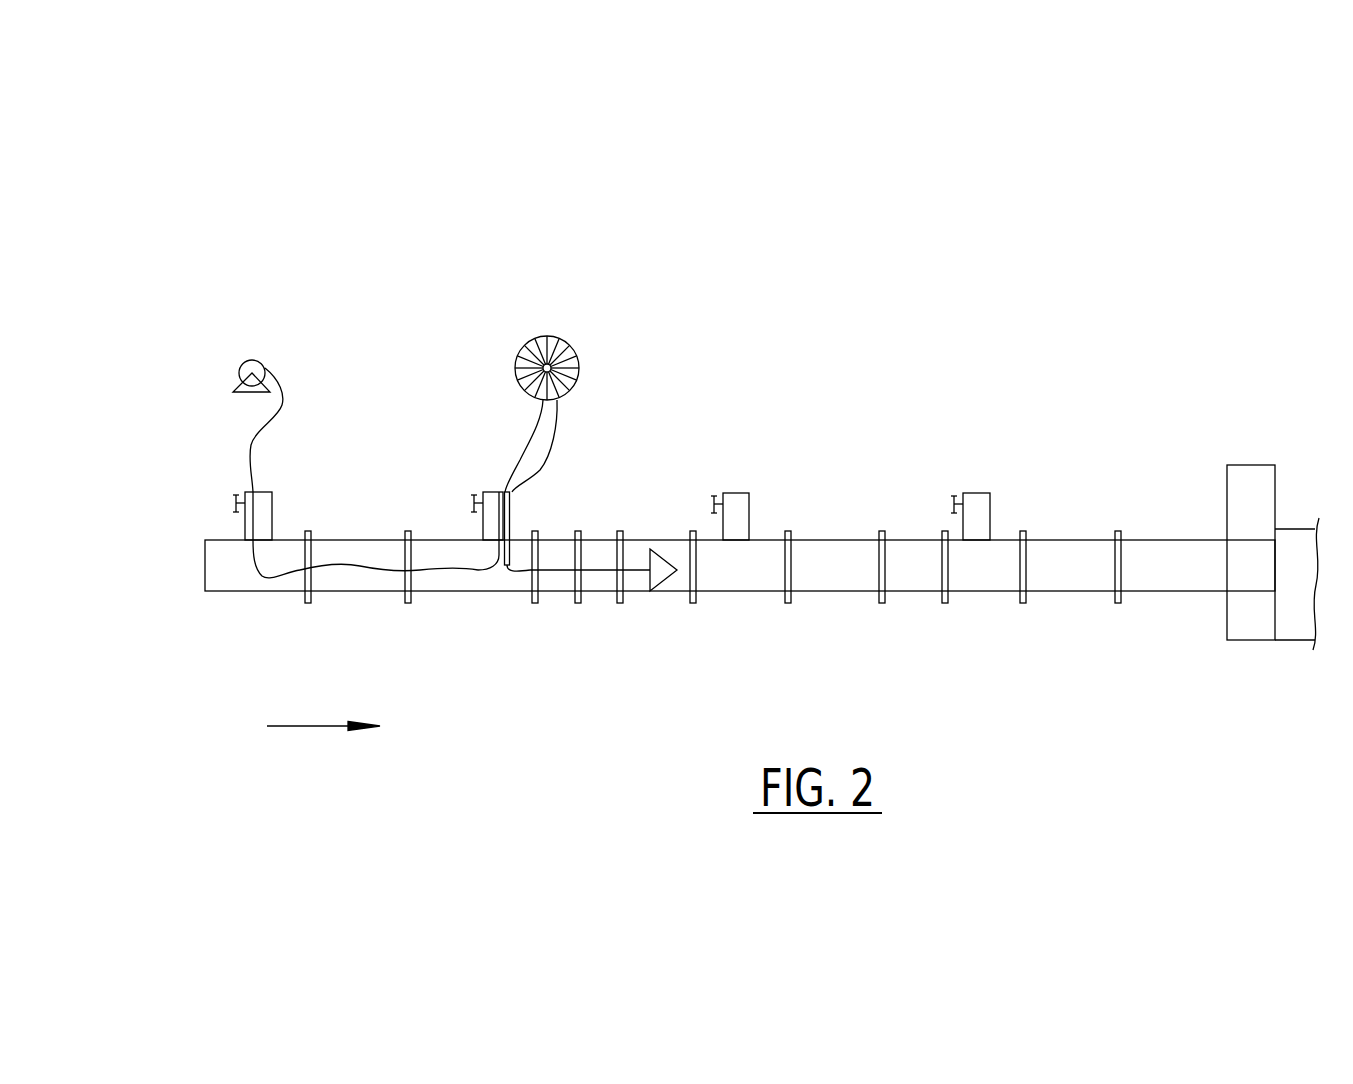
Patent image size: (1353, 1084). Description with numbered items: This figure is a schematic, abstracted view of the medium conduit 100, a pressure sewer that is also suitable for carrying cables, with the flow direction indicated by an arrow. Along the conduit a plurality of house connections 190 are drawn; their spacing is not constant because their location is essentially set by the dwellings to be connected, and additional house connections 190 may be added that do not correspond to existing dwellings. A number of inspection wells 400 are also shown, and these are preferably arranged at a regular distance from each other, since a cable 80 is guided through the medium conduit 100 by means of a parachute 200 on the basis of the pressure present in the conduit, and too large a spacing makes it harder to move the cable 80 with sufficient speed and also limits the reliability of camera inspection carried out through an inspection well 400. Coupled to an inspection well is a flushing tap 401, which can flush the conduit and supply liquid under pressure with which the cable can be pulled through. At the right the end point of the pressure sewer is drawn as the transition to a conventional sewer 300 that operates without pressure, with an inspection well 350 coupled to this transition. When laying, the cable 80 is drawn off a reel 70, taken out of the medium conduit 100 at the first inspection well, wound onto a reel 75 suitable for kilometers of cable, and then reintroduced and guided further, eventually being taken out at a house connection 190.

The medium conduit 100 is at (211, 417).
The reel 70 is at (253, 362).
The reel 75 is at (574, 346).
The cable 80 is at (357, 571).
The inspection well 400 is at (576, 469).
The flushing tap 401 is at (243, 498).
The house connection 190 is at (308, 605).
The parachute 200 is at (658, 583).
The inspection well 350 is at (1250, 480).
The conventional sewer 300 is at (1293, 535).